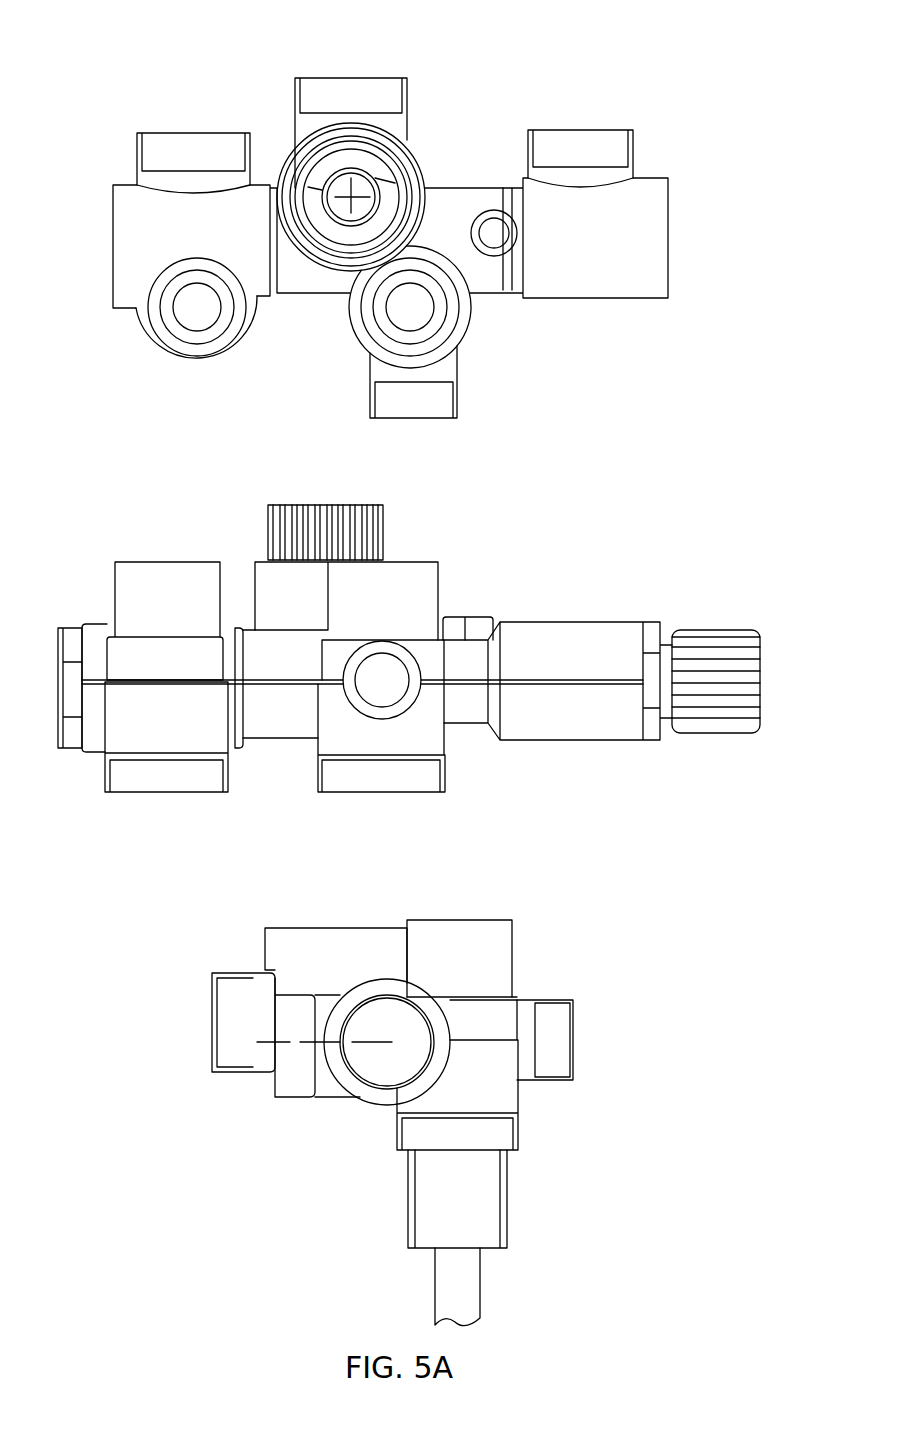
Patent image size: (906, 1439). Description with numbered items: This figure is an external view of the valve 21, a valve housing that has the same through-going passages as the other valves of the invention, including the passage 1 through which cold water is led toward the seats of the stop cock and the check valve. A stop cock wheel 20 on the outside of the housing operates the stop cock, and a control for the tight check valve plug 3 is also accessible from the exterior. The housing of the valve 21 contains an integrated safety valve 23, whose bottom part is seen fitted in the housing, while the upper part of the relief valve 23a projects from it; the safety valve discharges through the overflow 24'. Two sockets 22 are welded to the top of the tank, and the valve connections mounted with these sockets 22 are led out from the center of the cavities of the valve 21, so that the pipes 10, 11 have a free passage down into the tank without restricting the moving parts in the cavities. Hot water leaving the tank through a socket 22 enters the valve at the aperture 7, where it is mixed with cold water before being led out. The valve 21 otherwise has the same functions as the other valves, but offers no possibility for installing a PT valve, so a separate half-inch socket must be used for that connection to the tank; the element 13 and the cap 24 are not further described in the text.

The through-going passage 1 is at (581, 130).
The check valve plug 3 is at (467, 617).
The aperture 7 is at (493, 1252).
The pipe 10 is at (385, 558).
The pipe 11 is at (435, 1295).
The connection port 13 is at (440, 418).
The stop cock wheel 20 is at (695, 630).
The valve housing 21 is at (448, 723).
The socket 22 is at (408, 1193).
The safety valve 23 is at (357, 188).
The upper part of the relief valve 23a is at (268, 510).
The cap 24 is at (243, 972).
The overflow 24' is at (355, 95).